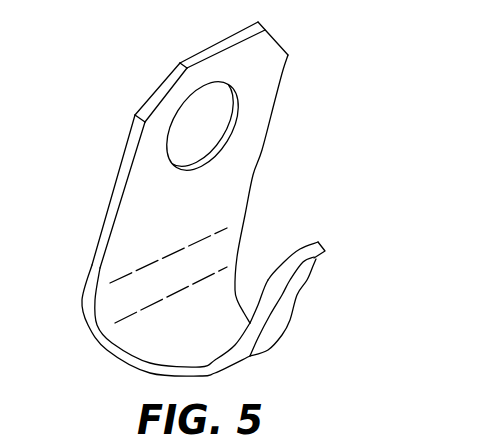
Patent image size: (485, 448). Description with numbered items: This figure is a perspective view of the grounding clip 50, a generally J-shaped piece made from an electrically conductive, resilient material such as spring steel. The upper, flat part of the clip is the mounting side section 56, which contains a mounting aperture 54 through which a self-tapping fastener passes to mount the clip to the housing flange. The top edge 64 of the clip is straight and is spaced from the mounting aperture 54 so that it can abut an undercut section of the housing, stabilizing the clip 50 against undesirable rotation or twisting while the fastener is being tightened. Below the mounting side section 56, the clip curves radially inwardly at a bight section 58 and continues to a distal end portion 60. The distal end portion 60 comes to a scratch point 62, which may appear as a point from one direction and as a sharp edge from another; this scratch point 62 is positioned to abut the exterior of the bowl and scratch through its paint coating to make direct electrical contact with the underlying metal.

The grounding clip 50 is at (237, 178).
The mounting aperture 54 is at (228, 109).
The mounting side section 56 is at (143, 162).
The bight section 58 is at (122, 357).
The distal end portion 60 is at (285, 311).
The scratch point 62 is at (323, 256).
The top edge 64 is at (213, 45).